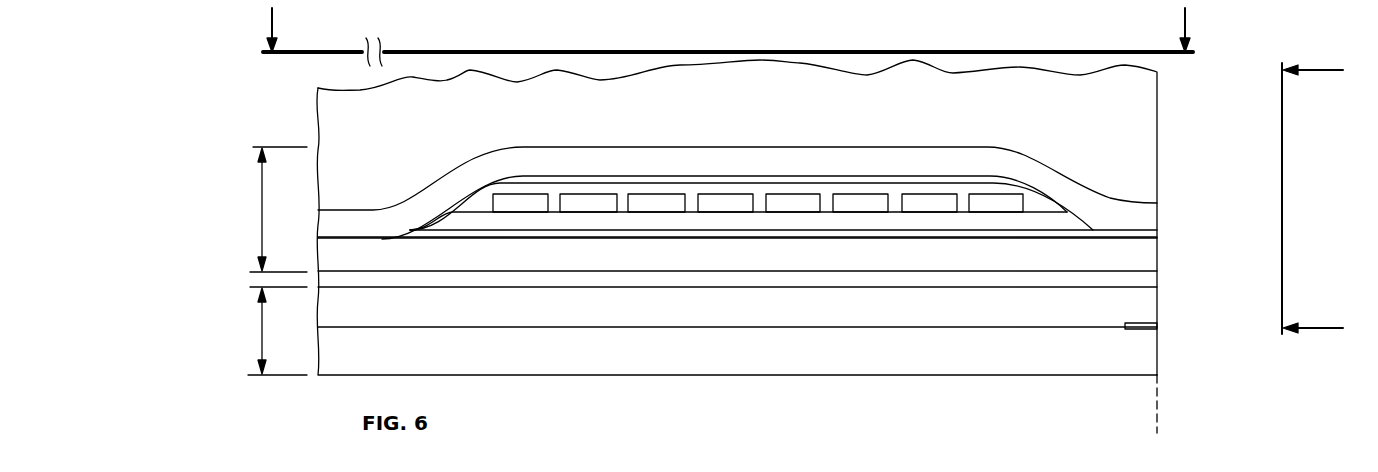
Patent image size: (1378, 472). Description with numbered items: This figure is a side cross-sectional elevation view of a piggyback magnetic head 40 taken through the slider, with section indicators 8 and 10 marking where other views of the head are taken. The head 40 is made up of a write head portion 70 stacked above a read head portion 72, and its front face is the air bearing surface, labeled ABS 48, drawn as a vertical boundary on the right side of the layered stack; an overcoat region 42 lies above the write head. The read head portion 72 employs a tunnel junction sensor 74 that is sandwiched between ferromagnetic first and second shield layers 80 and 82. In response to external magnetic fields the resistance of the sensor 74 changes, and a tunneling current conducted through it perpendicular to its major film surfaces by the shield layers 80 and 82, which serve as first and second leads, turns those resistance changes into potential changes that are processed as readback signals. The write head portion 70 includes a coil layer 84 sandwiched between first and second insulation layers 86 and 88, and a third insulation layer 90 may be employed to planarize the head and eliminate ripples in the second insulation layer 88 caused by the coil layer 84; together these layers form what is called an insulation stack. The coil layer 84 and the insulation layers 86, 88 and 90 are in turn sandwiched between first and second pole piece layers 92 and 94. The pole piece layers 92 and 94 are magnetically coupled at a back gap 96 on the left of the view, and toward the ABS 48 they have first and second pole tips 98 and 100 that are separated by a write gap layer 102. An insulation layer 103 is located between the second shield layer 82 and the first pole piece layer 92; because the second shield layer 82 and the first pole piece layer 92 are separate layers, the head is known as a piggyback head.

The section line 10- 10 is at (728, 34).
The section line 8- 8 is at (1322, 199).
The piggyback magnetic head 40 is at (295, 95).
The overcoat layer 42 is at (1140, 100).
The air bearing surface (ABS) 48 is at (1157, 430).
The write head portion 70 is at (260, 215).
The read head portion 72 is at (260, 337).
The tunnel junction sensor 74 is at (1157, 327).
The first shield layer 80 is at (917, 358).
The second shield layer 82 is at (1025, 305).
The coil layer 84 is at (790, 202).
The first insulation layer 86 is at (698, 220).
The second insulation layer 88 is at (1040, 202).
The third insulation layer 90 is at (562, 178).
The first pole piece layer 92 is at (1073, 258).
The second pole piece layer 94 is at (933, 158).
The back gap 96 is at (361, 238).
The first pole tip 98 is at (1157, 258).
The second pole tip 100 is at (1150, 212).
The write gap layer 102 is at (1157, 232).
The insulation layer 103 is at (977, 278).